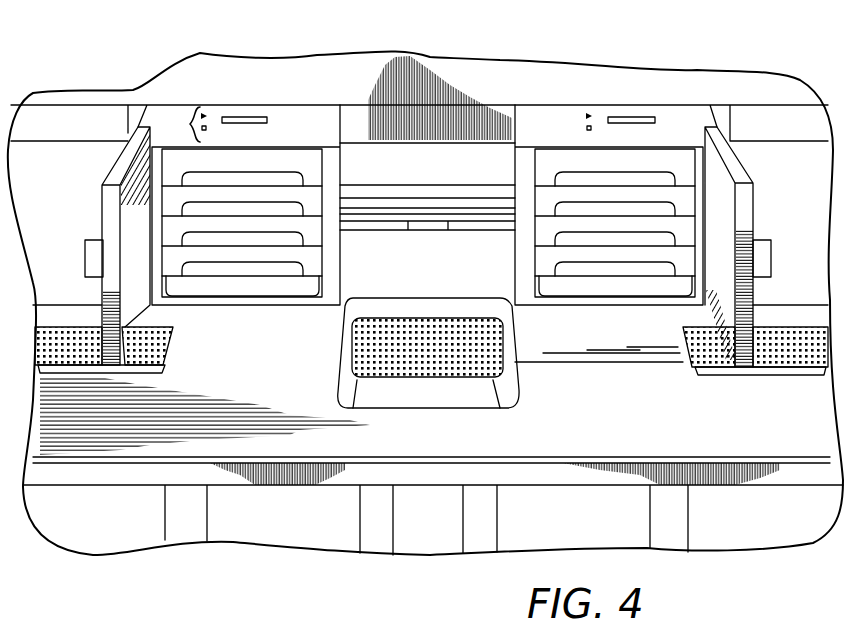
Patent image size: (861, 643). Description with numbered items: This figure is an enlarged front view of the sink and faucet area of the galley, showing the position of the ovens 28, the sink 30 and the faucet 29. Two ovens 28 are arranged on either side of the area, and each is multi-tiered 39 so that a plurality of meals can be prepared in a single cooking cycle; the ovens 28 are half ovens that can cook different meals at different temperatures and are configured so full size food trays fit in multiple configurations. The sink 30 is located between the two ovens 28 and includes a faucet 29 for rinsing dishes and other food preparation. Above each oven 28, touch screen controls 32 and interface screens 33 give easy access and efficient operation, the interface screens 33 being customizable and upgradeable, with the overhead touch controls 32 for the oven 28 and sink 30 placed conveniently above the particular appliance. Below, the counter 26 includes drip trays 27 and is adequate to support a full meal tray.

The counter 26 is at (753, 436).
The drip tray 27 is at (173, 342).
The oven 28 is at (293, 162).
The faucet 29 is at (430, 230).
The sink 30 is at (467, 395).
The touch screen controls 32 is at (187, 122).
The interface screens 33 is at (268, 120).
The tiers 39 is at (257, 213).